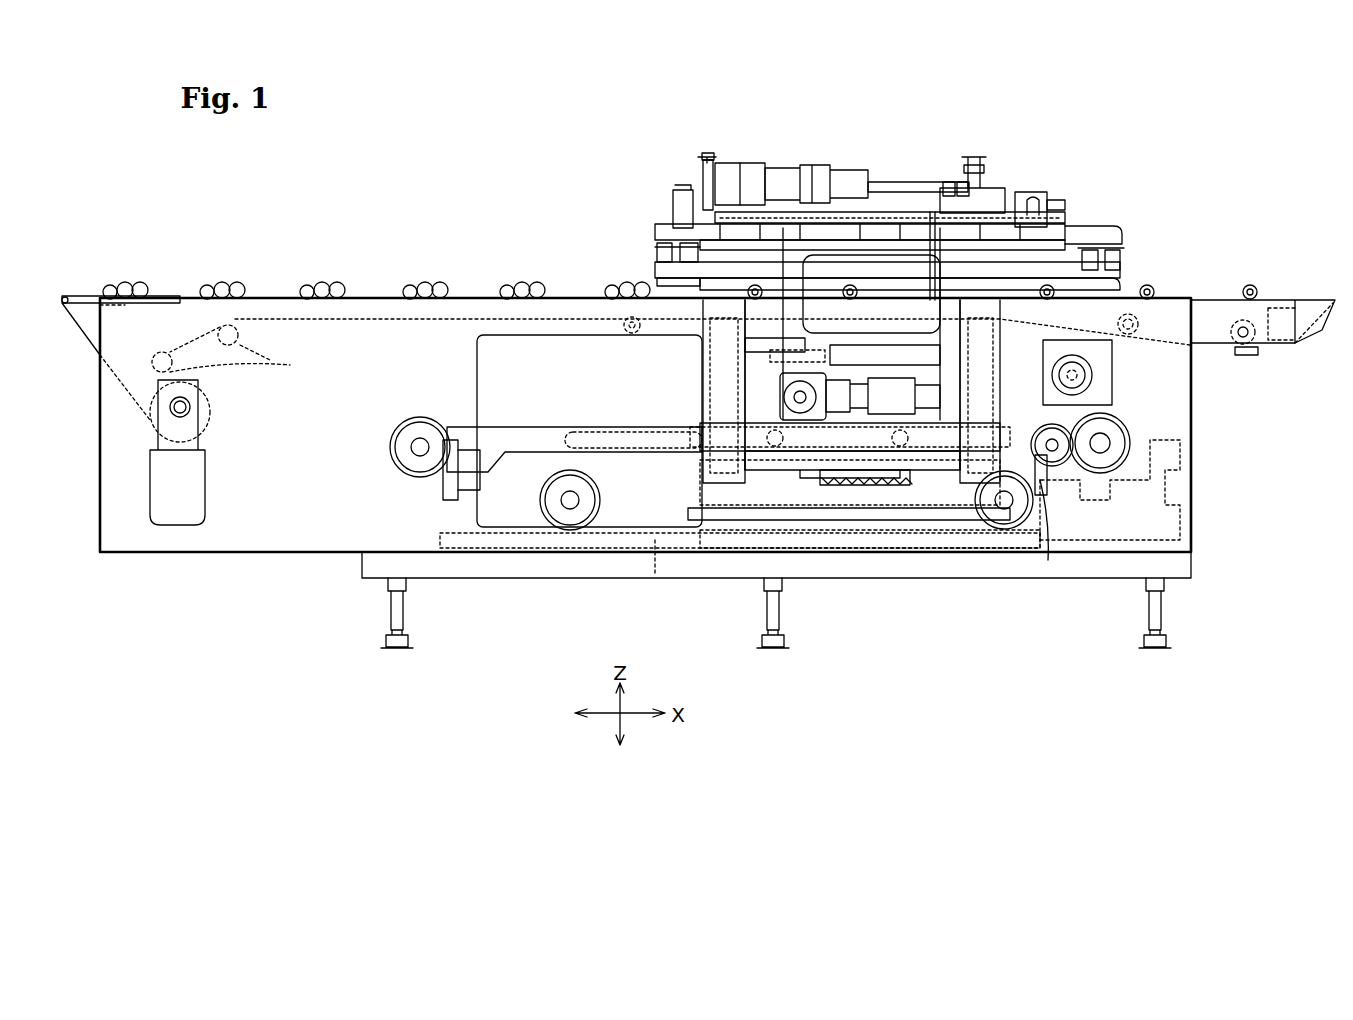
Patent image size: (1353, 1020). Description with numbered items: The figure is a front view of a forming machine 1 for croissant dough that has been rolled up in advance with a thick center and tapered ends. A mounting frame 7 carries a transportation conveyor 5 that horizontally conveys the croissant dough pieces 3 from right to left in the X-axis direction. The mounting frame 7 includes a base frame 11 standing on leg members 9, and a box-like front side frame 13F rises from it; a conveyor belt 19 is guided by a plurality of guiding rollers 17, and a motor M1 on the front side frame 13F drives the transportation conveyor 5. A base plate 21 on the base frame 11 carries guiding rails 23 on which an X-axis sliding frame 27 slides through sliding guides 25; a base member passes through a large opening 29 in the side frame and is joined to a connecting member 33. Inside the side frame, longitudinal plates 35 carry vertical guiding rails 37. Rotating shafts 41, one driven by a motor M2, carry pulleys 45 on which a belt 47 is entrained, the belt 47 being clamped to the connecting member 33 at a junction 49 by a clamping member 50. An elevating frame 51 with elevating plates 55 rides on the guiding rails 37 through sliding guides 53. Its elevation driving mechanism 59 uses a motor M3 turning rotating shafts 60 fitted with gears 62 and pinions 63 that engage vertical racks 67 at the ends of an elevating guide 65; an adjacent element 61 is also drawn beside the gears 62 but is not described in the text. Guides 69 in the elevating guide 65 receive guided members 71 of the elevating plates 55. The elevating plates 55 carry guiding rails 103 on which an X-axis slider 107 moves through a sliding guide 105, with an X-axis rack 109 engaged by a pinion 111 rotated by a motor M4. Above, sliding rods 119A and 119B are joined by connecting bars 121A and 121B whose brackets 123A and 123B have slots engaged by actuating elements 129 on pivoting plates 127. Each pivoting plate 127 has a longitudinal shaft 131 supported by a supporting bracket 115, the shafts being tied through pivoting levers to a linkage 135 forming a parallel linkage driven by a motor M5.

The forming machine 1 is at (1118, 94).
The croissant dough pieces 3 is at (233, 283).
The transportation conveyor 5 is at (1334, 286).
The mounting frame 7 is at (1201, 428).
The leg members 9 is at (405, 612).
The base frame 11 is at (530, 565).
The front side frame 13F is at (300, 545).
The guiding rollers 17 is at (65, 297).
The conveyor belt 19 is at (85, 332).
The base plate 21 is at (440, 541).
The guiding rails 23 is at (655, 560).
The sliding guides 25 is at (720, 522).
The X-axis sliding frame 27 is at (691, 506).
The large opening 29 is at (476, 368).
The connecting member 33 is at (830, 487).
The longitudinal plates 35 is at (700, 348).
The guiding rails 37 is at (700, 375).
The rotating shafts 41 is at (572, 530).
The pulleys 45 is at (590, 522).
The belt 47 is at (588, 510).
The junction 49 is at (865, 497).
The clamping member 50 is at (845, 522).
The elevating frame 51 is at (697, 416).
The sliding guides 53 is at (785, 380).
The elevating plates 55 is at (700, 372).
The elevation driving mechanism 59 is at (1095, 430).
The rotating shafts 60 is at (1172, 447).
The roller 61 is at (395, 440).
The gears 62 is at (1107, 445).
The pinion 63 is at (405, 462).
The elevating guide 65 is at (522, 440).
The vertical rack 67 is at (442, 495).
The guides 69 is at (580, 436).
The guided members 71 is at (775, 448).
The guiding rails 103 is at (934, 245).
The sliding guide 105 is at (826, 232).
The X-axis slider 107 is at (945, 320).
The X-axis rack 109 is at (962, 380).
The pinion 111 is at (748, 346).
The supporting bracket 115 is at (905, 213).
The sliding rod 119A is at (690, 262).
The sliding rod 119B is at (672, 222).
The connecting bar 121A is at (1125, 290).
The connecting bar 121B is at (1085, 248).
The bracket 123A is at (960, 215).
The bracket 123B is at (770, 212).
The pivoting plates 127 is at (706, 166).
The actuating elements 129 is at (1133, 333).
The longitudinal shaft 131 is at (712, 155).
The linkage 135 is at (985, 168).
The motor M1 is at (195, 470).
The motor M2 is at (1190, 535).
The motor M3 is at (1092, 372).
The motor M4 is at (905, 388).
The motor M5 is at (740, 163).